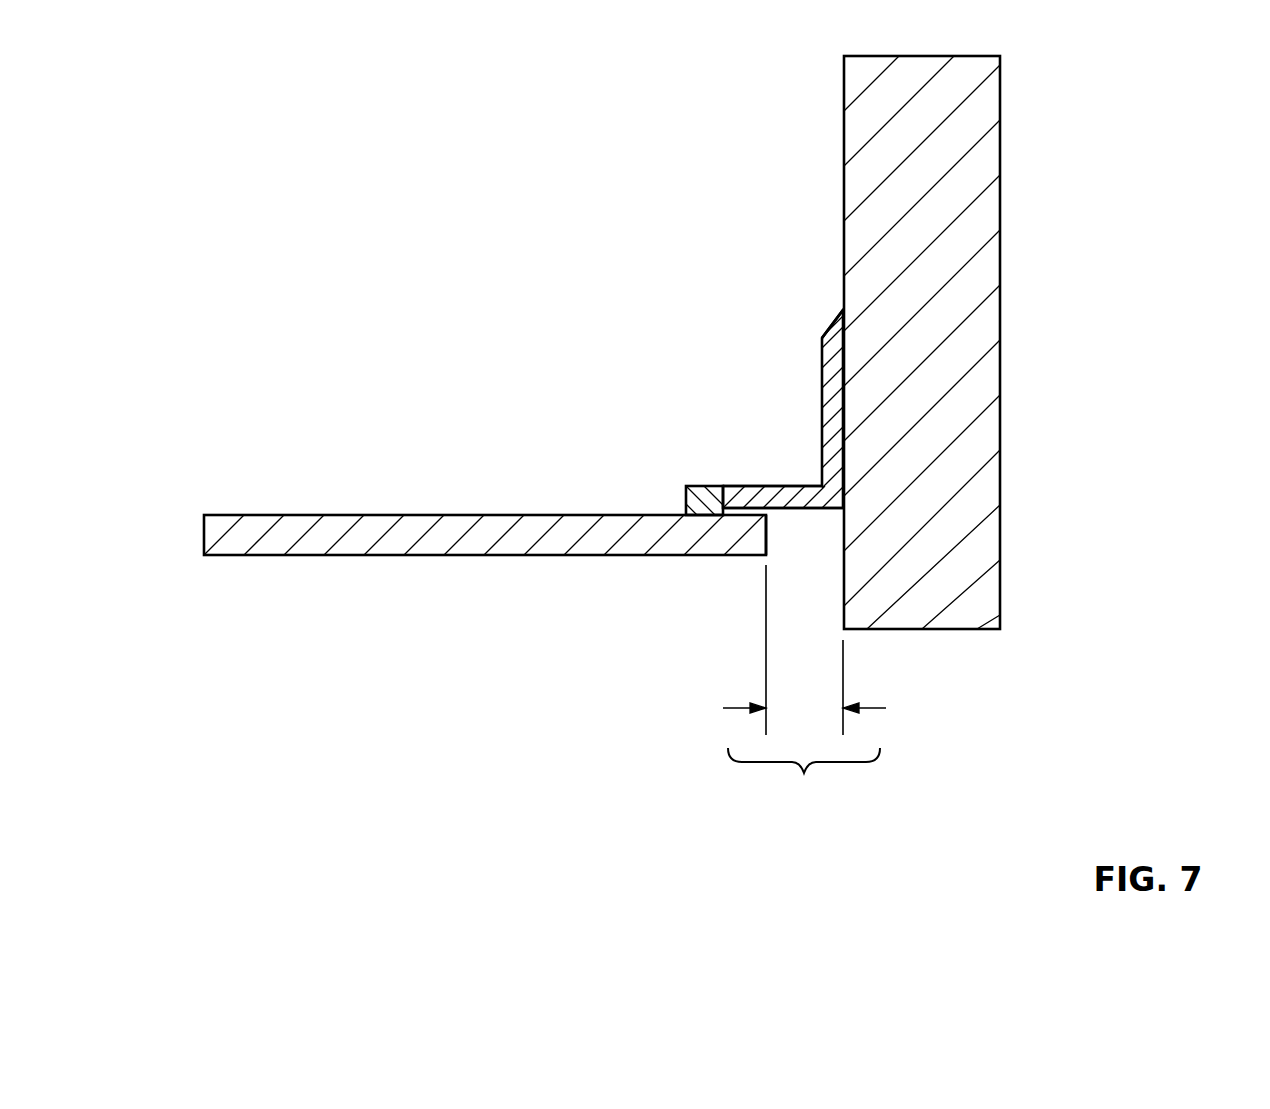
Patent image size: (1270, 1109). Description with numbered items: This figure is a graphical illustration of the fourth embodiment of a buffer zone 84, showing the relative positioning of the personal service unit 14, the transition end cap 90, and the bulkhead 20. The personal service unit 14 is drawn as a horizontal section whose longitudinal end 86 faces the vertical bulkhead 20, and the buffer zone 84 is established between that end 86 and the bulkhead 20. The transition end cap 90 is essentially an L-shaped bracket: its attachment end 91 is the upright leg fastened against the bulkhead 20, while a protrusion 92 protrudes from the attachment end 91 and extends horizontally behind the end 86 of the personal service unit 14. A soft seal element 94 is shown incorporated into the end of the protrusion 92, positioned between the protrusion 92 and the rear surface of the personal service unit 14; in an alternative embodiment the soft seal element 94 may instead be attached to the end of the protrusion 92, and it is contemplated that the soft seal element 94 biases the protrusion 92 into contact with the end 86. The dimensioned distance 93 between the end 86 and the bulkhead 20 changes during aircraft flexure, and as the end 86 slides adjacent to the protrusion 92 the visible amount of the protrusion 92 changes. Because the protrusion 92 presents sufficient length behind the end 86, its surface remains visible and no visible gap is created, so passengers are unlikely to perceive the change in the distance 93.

The personal service unit 14 is at (510, 555).
The bulkhead 20 is at (978, 208).
The buffer zone 84 is at (804, 780).
The longitudinal end 86 is at (782, 543).
The transition end cap 90 is at (830, 495).
The attachment end 91 is at (830, 372).
The protrusion 92 is at (760, 495).
The distance 93 is at (804, 650).
The soft seal element 94 is at (687, 495).